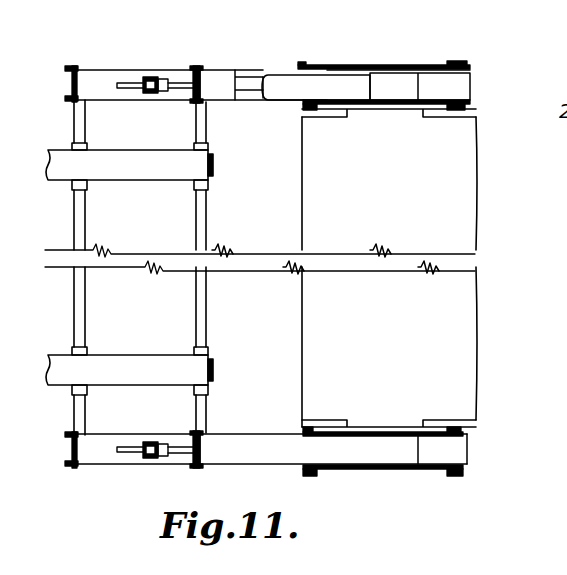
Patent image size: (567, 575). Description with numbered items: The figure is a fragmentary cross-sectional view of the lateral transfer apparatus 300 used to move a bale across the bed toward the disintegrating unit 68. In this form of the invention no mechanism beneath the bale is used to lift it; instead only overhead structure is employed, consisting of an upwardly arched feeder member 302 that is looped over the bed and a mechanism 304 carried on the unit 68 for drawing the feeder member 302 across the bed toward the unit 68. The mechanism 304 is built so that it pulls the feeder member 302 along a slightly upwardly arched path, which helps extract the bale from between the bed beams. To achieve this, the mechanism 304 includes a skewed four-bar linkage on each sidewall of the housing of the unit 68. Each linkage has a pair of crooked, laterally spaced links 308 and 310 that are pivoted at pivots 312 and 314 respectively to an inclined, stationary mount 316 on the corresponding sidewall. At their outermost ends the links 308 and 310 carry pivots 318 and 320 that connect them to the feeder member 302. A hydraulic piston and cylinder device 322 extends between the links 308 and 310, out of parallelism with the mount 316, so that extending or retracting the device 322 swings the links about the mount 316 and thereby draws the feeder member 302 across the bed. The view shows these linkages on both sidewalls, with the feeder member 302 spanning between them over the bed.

The disintegrating unit 68 is at (490, 173).
The lateral transfer apparatus 300 is at (47, 147).
The feeder member 302 is at (142, 173).
The mechanism 304 is at (125, 58).
The link 308 is at (160, 101).
The link 310 is at (216, 76).
The pivot 312 is at (305, 65).
The pivot 314 is at (449, 64).
The stationary mount 316 is at (368, 68).
The pivot 318 is at (77, 66).
The pivot 320 is at (198, 66).
The hydraulic piston and cylinder device 322 is at (292, 89).